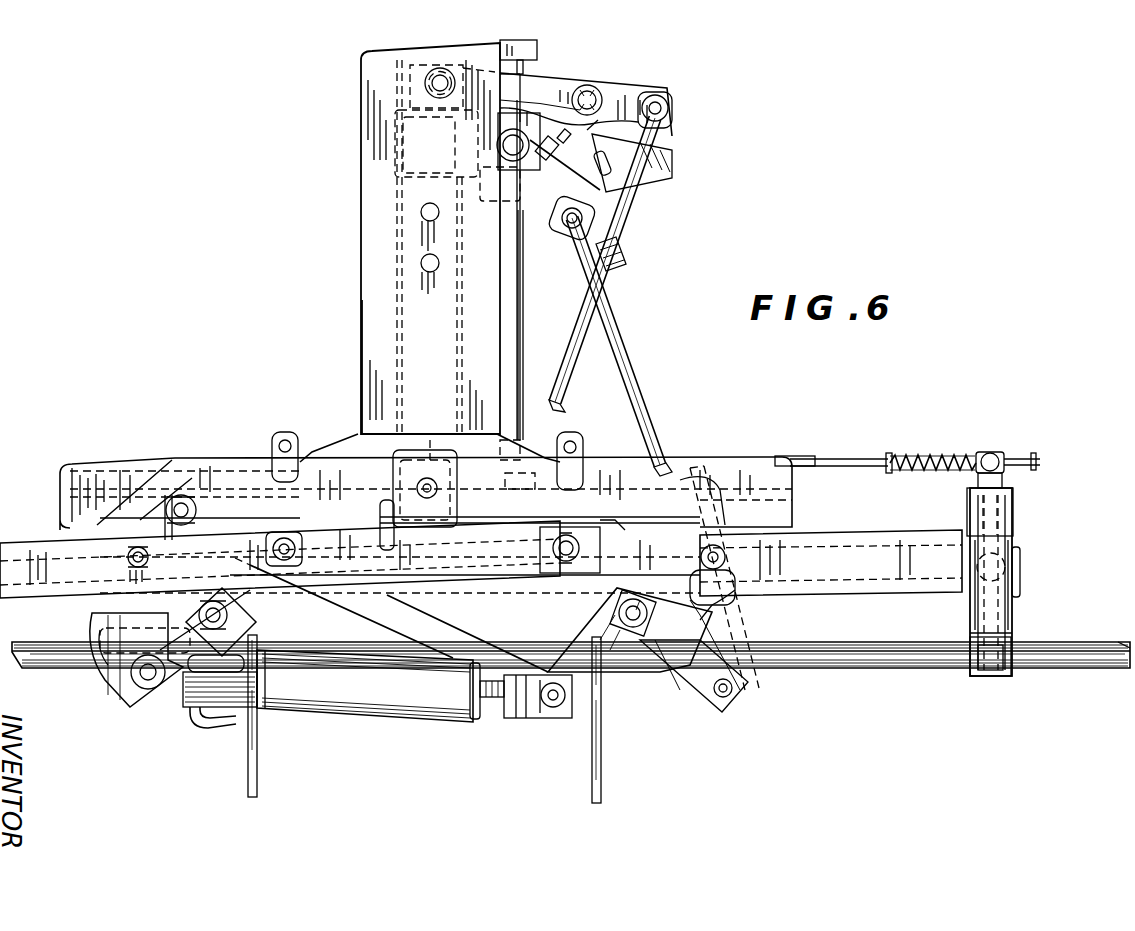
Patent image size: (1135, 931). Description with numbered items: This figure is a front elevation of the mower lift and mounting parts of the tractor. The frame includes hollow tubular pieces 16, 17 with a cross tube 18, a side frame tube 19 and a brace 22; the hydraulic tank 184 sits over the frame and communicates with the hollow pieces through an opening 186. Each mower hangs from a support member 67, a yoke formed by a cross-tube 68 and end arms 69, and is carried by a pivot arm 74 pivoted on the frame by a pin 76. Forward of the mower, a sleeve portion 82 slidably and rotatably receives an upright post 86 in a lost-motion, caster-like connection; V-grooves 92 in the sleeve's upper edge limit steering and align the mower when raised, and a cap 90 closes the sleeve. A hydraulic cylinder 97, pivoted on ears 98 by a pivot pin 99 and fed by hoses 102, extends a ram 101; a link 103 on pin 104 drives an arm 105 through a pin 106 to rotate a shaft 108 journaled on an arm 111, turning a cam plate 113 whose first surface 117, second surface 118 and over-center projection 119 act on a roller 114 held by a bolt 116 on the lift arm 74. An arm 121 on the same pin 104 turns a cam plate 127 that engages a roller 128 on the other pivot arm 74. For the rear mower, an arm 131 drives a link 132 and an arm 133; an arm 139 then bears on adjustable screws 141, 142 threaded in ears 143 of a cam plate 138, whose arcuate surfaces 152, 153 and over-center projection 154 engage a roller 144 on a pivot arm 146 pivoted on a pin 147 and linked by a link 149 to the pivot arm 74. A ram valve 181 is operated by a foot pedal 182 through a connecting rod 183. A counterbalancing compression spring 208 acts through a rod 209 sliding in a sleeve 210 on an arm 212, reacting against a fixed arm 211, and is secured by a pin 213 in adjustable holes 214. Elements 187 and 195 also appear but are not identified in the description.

The hollow tubular piece 16 is at (396, 290).
The hollow tubular piece 17 is at (397, 140).
The cross tube 18 is at (512, 595).
The side frame tube 19 is at (740, 600).
The brace 22 is at (470, 506).
The pivotal mounting or support member 67 is at (884, 680).
The cross-tube 68 is at (872, 650).
The end arms 69 is at (600, 690).
The pivot arm 74 is at (20, 540).
The pivot pin 76 is at (580, 548).
The sleeve portion 82 is at (1013, 618).
The upright post 86 is at (985, 678).
The cap 90 is at (1014, 534).
The V-grooves 92 is at (974, 496).
The hydraulic cylinder 97 is at (305, 712).
The ears 98 is at (112, 634).
The pivot pin 99 is at (178, 708).
The cylinder ram 101 is at (488, 700).
The hydraulic hoses 102 is at (235, 729).
The link 103 is at (436, 625).
The pin 104 is at (551, 720).
The arm 105 is at (199, 505).
The pin 106 is at (192, 488).
The shaft 108 is at (251, 614).
The arm 111 is at (245, 589).
The plate 113 is at (101, 699).
The roller 114 is at (162, 519).
The bolt 116 is at (122, 558).
The first surface 117 is at (170, 588).
The second surface 118 is at (100, 675).
The projection 119 is at (113, 621).
The arm 121 is at (599, 632).
The cam plate 127 is at (615, 522).
The roller 128 is at (700, 463).
The arm 131 is at (661, 680).
The link 132 is at (630, 340).
The arm 133 is at (586, 220).
The cam plate 138 is at (673, 170).
The arm 139 is at (524, 222).
The screw 141 is at (503, 166).
The screw 142 is at (600, 180).
The ears 143 is at (492, 202).
The roller 144 is at (600, 88).
The pivot arm 146 is at (673, 105).
The pin 147 is at (412, 78).
The link 149 is at (627, 260).
The surface 152 is at (673, 147).
The surface 153 is at (520, 108).
The projection 154 is at (641, 85).
The ram valve 181 is at (538, 47).
The foot pedal control 182 is at (518, 470).
The connecting rod 183 is at (520, 318).
The hydraulic reservoir 184 is at (362, 360).
The opening 186 is at (434, 447).
The bolt 187 is at (440, 483).
The holes 195 is at (420, 258).
The counterbalancing spring 208 is at (936, 455).
The rod 209 is at (1023, 459).
The sleeve 210 is at (990, 452).
The fixed arm 211 is at (582, 450).
The arm 212 is at (1003, 487).
The pin 213 is at (882, 457).
The holes 214 is at (800, 455).